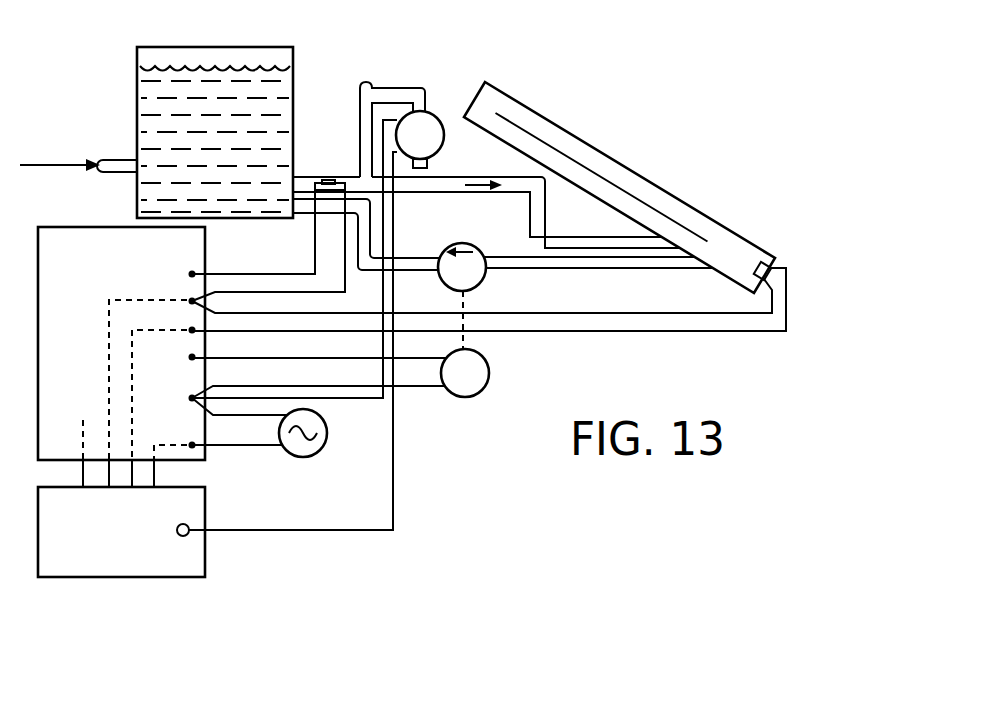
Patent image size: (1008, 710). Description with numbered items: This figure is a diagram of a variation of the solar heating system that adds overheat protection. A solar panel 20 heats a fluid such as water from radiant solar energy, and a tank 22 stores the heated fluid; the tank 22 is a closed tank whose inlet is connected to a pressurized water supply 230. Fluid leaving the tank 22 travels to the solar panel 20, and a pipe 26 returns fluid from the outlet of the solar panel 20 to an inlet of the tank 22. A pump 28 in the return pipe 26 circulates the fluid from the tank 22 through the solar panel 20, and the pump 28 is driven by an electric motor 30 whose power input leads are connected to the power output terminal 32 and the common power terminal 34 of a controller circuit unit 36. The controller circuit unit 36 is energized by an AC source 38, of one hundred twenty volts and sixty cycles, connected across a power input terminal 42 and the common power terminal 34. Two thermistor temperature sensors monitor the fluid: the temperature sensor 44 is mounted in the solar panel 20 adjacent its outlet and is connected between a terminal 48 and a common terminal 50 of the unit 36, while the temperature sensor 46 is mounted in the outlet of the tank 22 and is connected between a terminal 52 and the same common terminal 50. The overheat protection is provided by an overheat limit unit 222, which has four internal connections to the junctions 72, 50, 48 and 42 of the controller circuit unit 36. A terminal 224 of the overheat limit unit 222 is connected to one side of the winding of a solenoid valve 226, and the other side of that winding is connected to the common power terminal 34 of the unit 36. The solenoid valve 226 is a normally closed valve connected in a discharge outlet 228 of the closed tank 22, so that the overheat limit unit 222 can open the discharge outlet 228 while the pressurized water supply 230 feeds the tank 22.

The solar panel 20 is at (565, 125).
The tank 22 is at (137, 70).
The pipe 26 is at (537, 264).
The pump 28 is at (478, 246).
The electric motor 30 is at (487, 362).
The power output terminal 32 is at (190, 358).
The common power terminal 34 is at (190, 398).
The controller circuit unit 36 is at (83, 227).
The AC source 38 is at (287, 443).
The power input terminal 42 is at (190, 445).
The temperature sensor 44 is at (813, 218).
The temperature sensor 46 is at (332, 180).
The terminal 48 is at (190, 331).
The common terminal 50 is at (190, 302).
The terminal 52 is at (190, 274).
The junction 72 is at (82, 450).
The overheat limit unit 222 is at (198, 507).
The terminal 224 is at (184, 536).
The solenoid valve 226 is at (435, 120).
The discharge outlet 228 is at (428, 164).
The pressurized water supply 230 is at (110, 164).